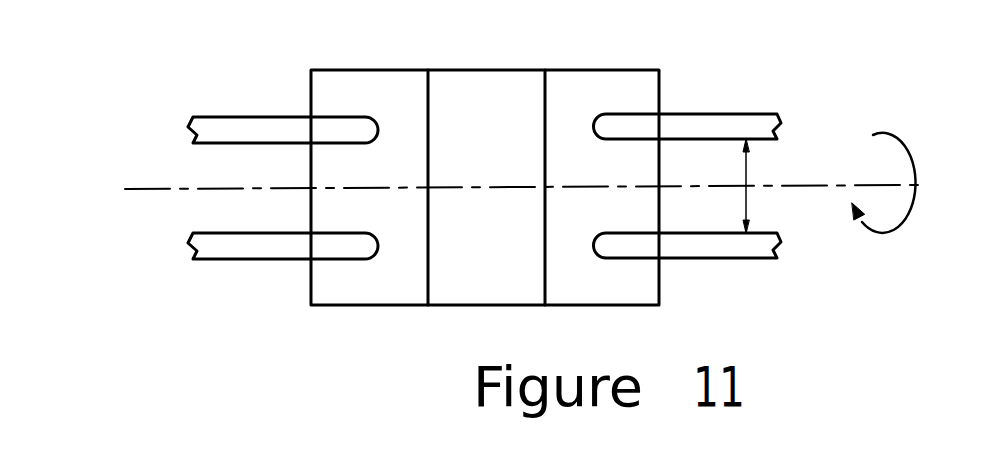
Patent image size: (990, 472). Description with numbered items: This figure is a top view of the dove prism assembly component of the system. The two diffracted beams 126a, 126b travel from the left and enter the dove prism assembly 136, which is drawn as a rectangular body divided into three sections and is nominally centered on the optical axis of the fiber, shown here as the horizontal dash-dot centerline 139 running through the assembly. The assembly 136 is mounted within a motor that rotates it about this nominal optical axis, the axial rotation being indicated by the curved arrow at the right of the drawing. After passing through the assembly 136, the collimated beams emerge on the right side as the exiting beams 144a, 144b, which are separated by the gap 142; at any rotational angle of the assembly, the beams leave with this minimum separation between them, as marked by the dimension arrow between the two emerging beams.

The dove prism assembly 136 is at (392, 62).
The diffracted beam 126a is at (275, 260).
The diffracted beam 126b is at (275, 117).
The first output shaft 144a is at (698, 258).
The second output shaft 144b is at (697, 114).
The central axis 139 is at (162, 189).
The gap 142 is at (747, 197).